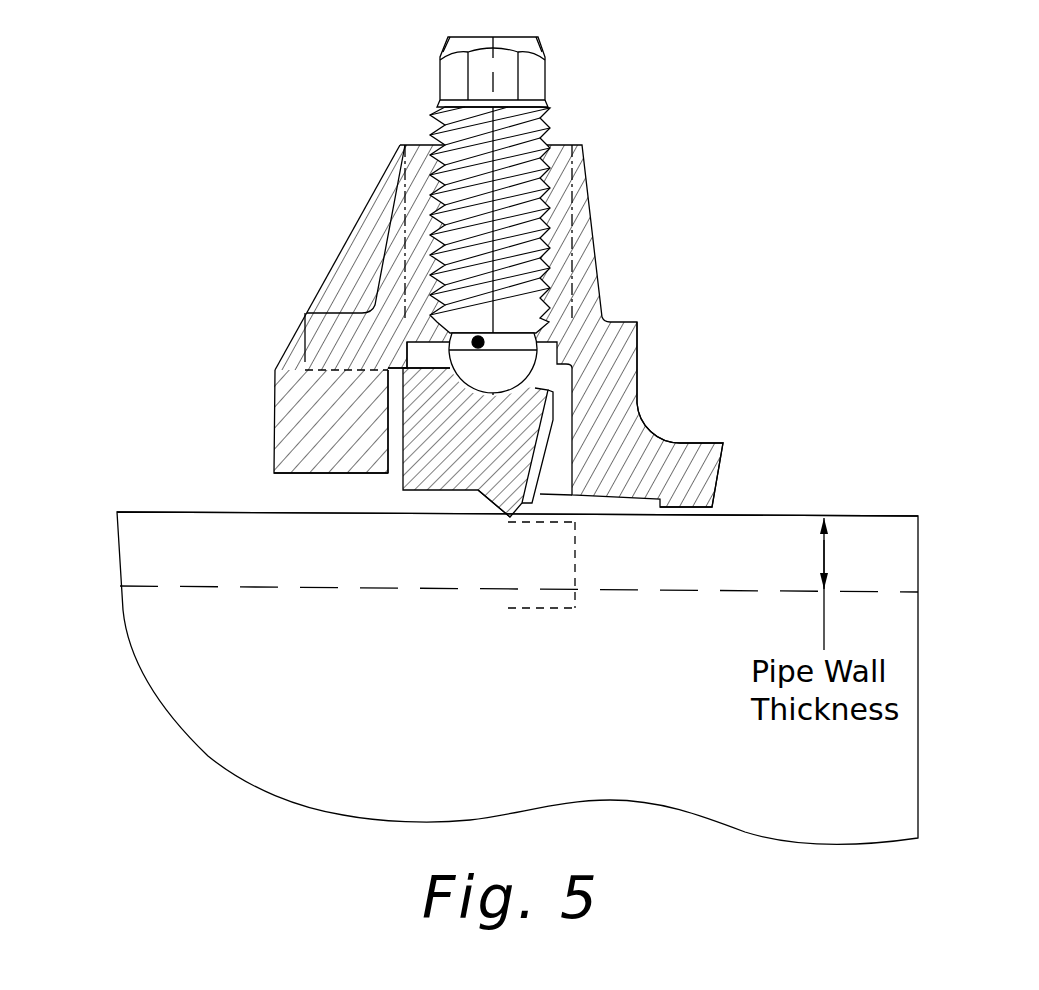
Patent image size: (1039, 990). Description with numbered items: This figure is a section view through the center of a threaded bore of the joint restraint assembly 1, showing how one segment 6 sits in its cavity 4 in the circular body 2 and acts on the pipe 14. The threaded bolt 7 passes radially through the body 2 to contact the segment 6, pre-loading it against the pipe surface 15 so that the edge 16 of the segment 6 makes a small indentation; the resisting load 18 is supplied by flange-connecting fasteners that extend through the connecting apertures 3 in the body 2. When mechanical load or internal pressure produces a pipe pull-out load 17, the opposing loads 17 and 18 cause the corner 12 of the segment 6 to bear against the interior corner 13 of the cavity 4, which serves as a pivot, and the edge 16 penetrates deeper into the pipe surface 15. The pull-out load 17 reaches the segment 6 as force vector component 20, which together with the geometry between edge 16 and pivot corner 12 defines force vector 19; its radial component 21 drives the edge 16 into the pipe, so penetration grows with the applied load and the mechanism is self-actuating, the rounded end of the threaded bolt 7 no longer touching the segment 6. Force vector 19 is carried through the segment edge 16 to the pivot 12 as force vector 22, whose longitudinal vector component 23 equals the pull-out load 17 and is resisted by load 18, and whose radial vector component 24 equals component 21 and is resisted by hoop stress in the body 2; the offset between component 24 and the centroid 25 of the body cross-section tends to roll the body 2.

The joint restraint assembly 1 is at (626, 303).
The body 2 is at (272, 430).
The connecting apertures 3 is at (598, 230).
The cavity 4 is at (378, 490).
The segment 6 is at (477, 497).
The threaded bolt 7 is at (555, 123).
The corner of segment 12 is at (405, 371).
The interior corner of cavity 13 is at (386, 366).
The pipe 14 is at (208, 757).
The pipe surface 15 is at (735, 512).
The edge of segment 16 is at (505, 525).
The pipe pull-out load 17 is at (117, 550).
The resisting load 18 is at (433, 226).
The force vector 19 is at (510, 524).
The force vector component 20 is at (512, 521).
The radial component of force vector 21 is at (508, 524).
The force vector 22 is at (404, 372).
The longitudinal vector component 23 is at (493, 363).
The radial vector component 24 is at (388, 372).
The centroid 25 is at (464, 336).